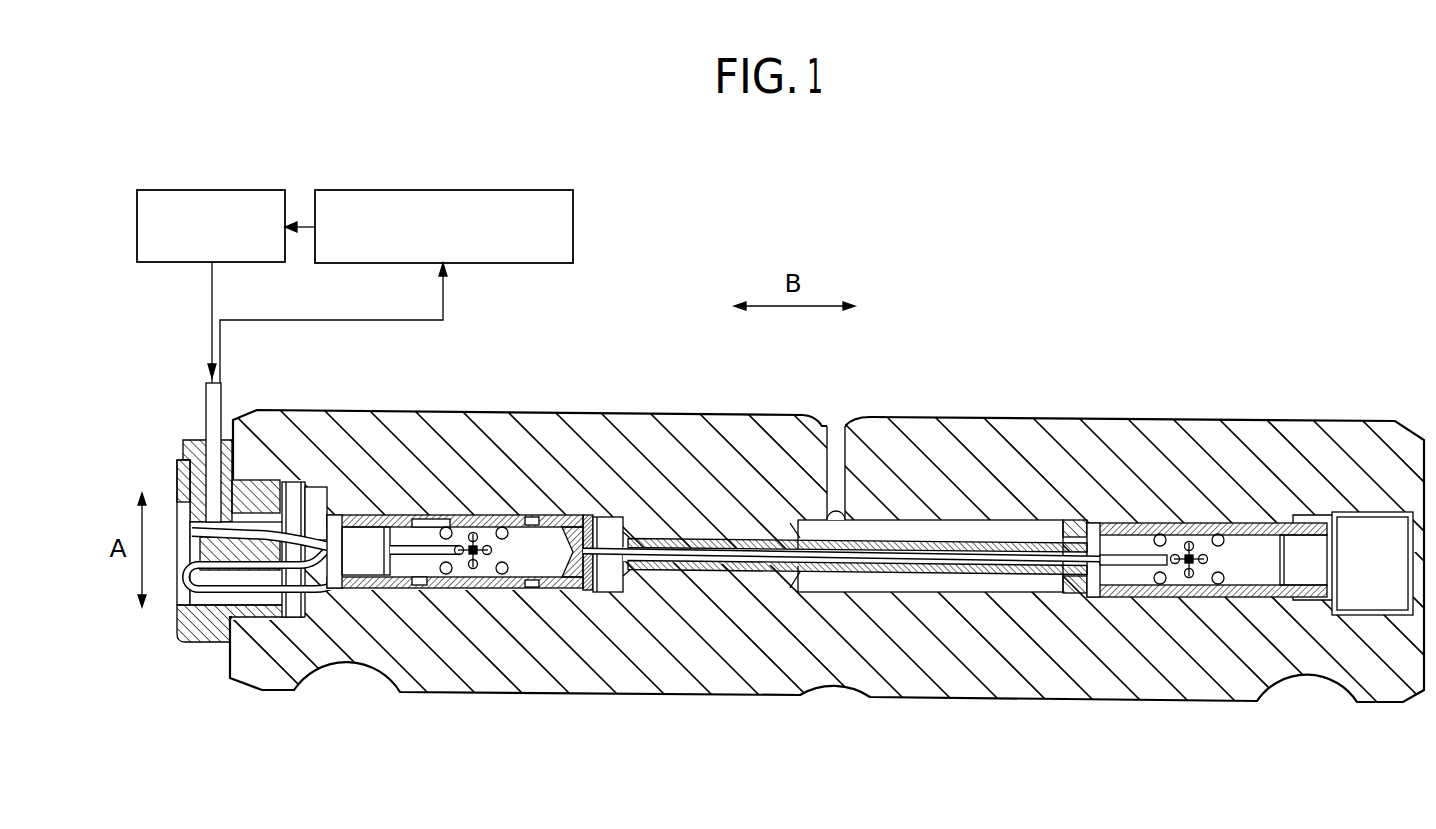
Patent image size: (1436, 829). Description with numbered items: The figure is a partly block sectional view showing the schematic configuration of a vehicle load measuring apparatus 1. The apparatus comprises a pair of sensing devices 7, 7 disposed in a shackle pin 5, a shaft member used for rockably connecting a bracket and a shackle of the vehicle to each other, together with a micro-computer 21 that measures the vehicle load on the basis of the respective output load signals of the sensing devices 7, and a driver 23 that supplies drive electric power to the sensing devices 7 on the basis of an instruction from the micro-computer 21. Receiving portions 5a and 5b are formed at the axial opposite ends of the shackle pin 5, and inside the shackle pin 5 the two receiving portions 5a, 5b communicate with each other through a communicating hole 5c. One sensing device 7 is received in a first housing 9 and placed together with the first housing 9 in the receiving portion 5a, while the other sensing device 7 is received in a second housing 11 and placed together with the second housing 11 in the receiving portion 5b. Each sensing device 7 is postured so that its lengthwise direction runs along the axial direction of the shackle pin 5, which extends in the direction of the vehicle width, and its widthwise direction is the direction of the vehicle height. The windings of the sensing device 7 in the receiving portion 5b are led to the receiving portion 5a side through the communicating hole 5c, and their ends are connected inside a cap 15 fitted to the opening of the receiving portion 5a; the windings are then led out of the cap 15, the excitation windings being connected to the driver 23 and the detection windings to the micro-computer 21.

The vehicle load measuring apparatus 1 is at (797, 580).
The shackle pin 5 is at (685, 415).
The receiving portion 5a is at (613, 595).
The receiving portion 5b is at (895, 590).
The communicating hole 5c is at (723, 558).
The sensing device 7 is at (527, 568).
The first housing 9 is at (484, 507).
The second housing 11 is at (1188, 518).
The cap 15 is at (190, 645).
The micro-computer 21 is at (443, 190).
The driver 23 is at (213, 190).